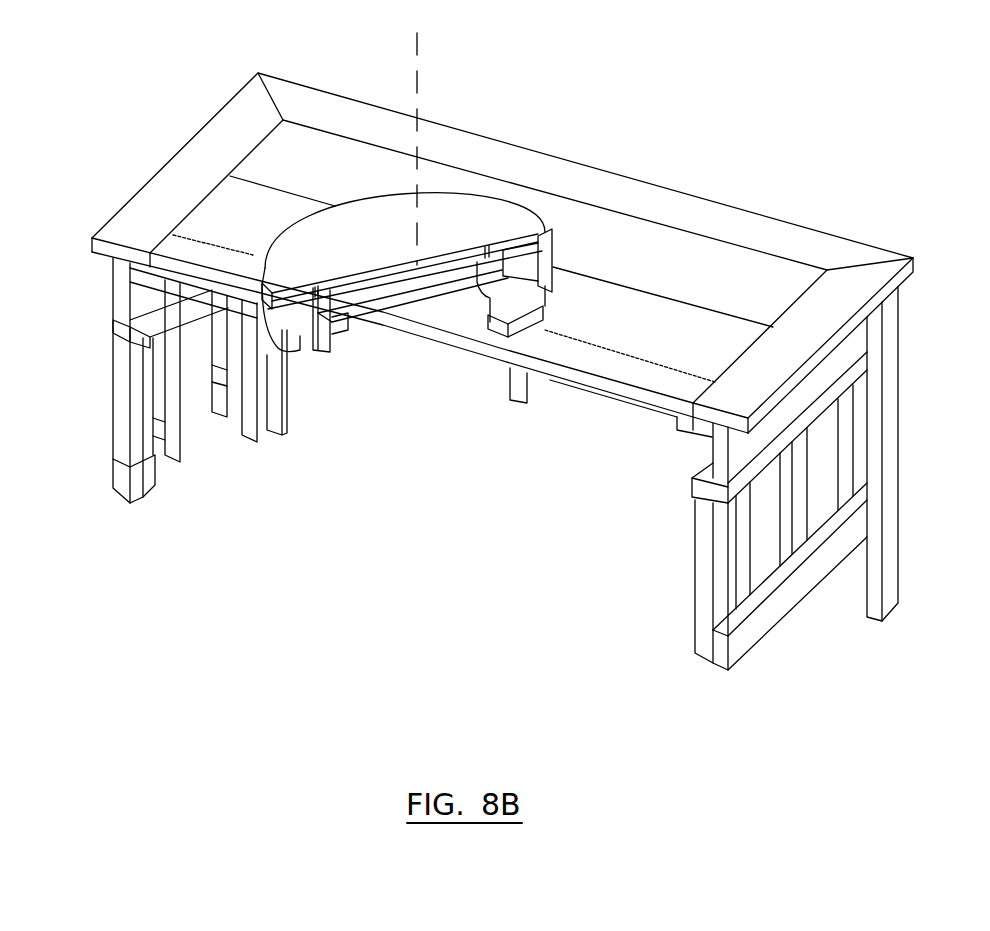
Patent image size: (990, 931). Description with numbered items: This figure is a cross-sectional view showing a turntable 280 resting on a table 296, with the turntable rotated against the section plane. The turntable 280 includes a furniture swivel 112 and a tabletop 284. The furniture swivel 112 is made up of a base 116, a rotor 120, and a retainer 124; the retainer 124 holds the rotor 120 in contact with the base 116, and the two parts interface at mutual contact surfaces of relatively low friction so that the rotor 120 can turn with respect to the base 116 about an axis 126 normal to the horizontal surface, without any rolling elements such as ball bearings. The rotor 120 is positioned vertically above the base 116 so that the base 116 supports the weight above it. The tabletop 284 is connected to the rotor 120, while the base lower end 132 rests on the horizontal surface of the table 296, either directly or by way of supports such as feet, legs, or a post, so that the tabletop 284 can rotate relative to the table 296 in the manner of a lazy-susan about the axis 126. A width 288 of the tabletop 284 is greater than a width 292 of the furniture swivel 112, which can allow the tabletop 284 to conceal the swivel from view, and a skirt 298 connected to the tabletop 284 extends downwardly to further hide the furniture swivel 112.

The furniture swivel 112 is at (323, 374).
The base 116 is at (422, 322).
The rotor 120 is at (373, 312).
The retainer 124 is at (503, 302).
The axis 126 is at (419, 97).
The base lower end 132 is at (470, 341).
The turntable 280 is at (531, 197).
The tabletop 284 is at (283, 250).
The width of tabletop 288 is at (553, 258).
The width of furniture swivel 292 is at (515, 302).
The table 296 is at (895, 242).
The skirt 298 is at (554, 252).